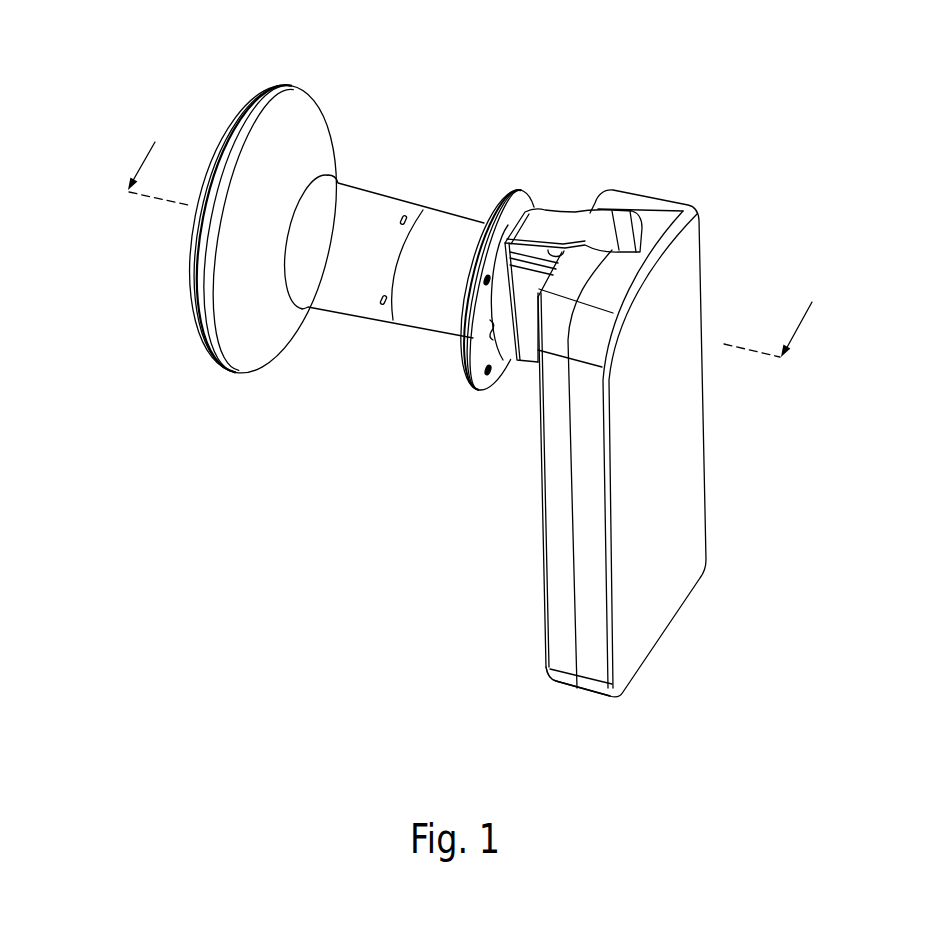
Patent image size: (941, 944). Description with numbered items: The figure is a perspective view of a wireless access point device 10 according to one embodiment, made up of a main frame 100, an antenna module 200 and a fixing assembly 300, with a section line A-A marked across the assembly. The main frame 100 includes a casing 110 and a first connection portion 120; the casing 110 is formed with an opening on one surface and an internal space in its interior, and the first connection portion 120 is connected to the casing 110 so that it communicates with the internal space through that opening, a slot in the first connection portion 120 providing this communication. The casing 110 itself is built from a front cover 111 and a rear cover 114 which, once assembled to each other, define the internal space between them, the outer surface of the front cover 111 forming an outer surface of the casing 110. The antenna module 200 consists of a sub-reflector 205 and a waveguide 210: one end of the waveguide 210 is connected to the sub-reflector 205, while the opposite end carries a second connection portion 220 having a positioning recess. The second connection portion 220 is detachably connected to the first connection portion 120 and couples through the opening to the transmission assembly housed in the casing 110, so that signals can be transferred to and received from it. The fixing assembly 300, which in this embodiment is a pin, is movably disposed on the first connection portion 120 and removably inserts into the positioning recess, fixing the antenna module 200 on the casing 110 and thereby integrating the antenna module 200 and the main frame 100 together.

The wireless access point device 10 is at (917, 61).
The main frame 100 is at (550, 403).
The casing 110 is at (468, 560).
The front cover 111 is at (560, 582).
The rear cover 114 is at (590, 620).
The first connection portion 120 is at (527, 375).
The antenna module 200 is at (485, 465).
The sub-reflector 205 is at (250, 340).
The waveguide 210 is at (429, 300).
The second connection portion 220 is at (480, 380).
The fixing assembly 300 is at (560, 200).